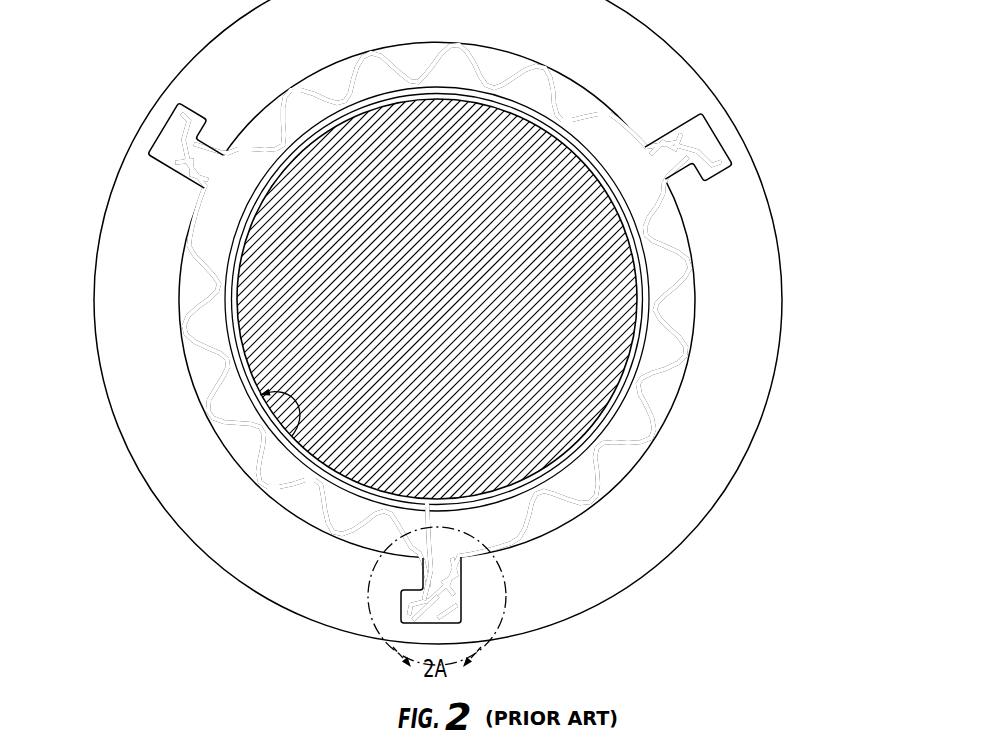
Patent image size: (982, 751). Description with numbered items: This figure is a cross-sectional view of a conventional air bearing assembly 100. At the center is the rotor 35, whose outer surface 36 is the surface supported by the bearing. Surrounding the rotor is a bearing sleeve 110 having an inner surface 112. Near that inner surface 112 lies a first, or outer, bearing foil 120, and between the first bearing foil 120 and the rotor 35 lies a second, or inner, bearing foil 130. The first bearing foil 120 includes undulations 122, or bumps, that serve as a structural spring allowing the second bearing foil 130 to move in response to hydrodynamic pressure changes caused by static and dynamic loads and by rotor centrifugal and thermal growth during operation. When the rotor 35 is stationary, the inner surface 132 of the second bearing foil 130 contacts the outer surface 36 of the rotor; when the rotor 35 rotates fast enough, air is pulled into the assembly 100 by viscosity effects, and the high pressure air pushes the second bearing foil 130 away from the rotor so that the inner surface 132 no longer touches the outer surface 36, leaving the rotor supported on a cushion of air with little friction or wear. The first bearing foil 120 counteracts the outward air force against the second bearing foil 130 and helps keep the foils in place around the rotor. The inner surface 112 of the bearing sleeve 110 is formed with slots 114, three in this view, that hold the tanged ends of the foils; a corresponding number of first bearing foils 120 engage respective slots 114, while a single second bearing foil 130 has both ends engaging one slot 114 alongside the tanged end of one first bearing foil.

The rotor 35 is at (340, 183).
The outer surface of the rotor 36 is at (235, 358).
The air bearing assembly 100 is at (472, 322).
The bearing sleeve 110 is at (741, 268).
The inner surface of the bearing sleeve 112 is at (651, 417).
The slot 114 is at (183, 188).
The first bearing foil 120 is at (676, 344).
The undulations 122 is at (601, 468).
The second bearing foil 130 is at (648, 252).
The inner surface of the second bearing foil 132 is at (430, 533).